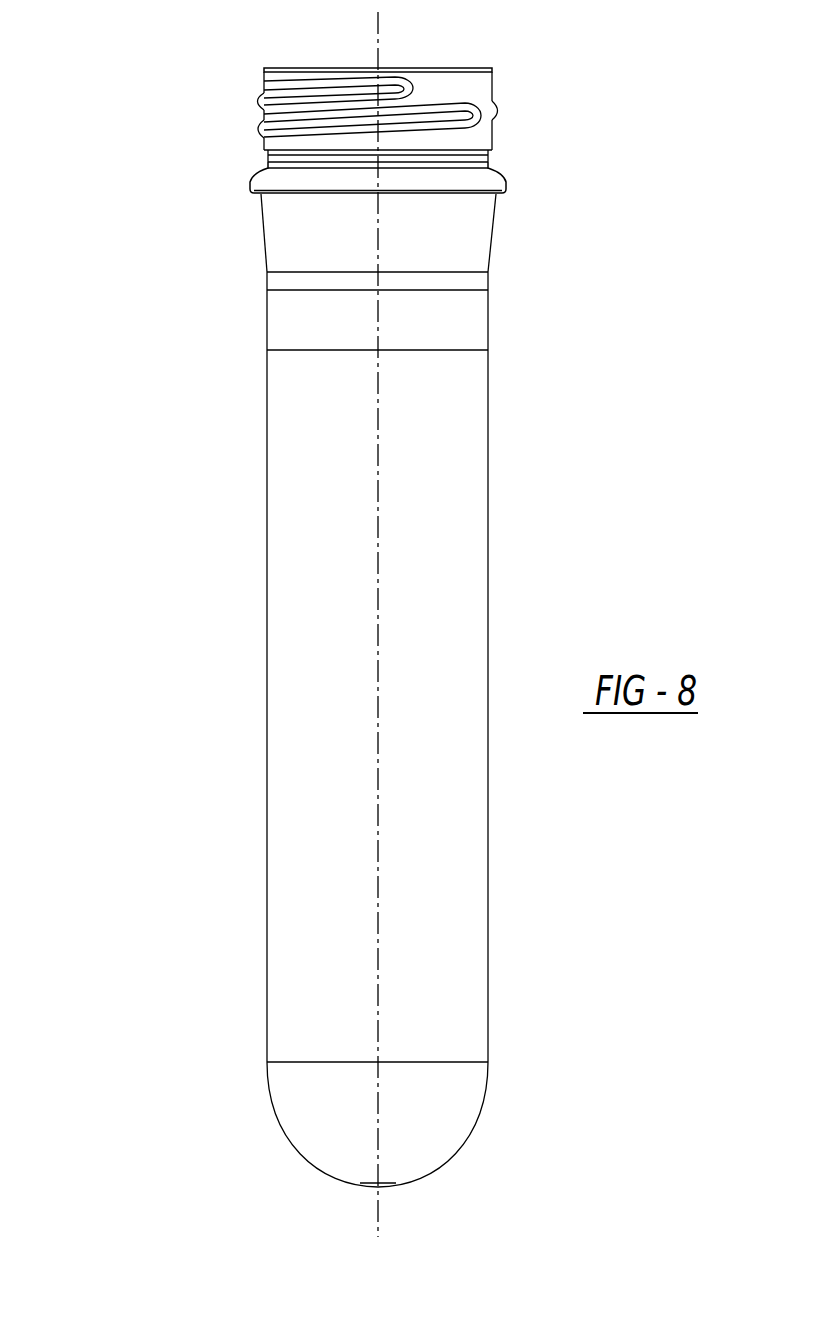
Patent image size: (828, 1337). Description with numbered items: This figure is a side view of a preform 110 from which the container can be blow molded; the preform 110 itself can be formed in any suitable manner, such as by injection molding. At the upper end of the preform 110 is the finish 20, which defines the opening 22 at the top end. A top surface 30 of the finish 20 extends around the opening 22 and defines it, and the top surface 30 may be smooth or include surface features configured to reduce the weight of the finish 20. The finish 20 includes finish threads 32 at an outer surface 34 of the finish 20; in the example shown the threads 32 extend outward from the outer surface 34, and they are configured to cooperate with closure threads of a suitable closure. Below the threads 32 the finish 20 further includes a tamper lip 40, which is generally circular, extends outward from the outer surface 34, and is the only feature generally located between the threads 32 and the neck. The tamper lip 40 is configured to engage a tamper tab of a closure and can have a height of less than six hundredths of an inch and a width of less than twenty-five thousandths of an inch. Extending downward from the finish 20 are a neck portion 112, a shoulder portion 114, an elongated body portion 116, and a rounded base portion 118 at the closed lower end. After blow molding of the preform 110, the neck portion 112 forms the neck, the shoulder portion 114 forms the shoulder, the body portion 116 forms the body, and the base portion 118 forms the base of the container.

The preform 110 is at (128, 120).
The finish 20 is at (432, 100).
The opening 22 is at (325, 68).
The top surface 30 is at (483, 68).
The finish threads 32 is at (502, 110).
The outer surface 34 is at (264, 78).
The tamper lip 40 is at (503, 177).
The neck portion 112 is at (263, 224).
The shoulder portion 114 is at (267, 310).
The body portion 116 is at (267, 620).
The base portion 118 is at (337, 1115).